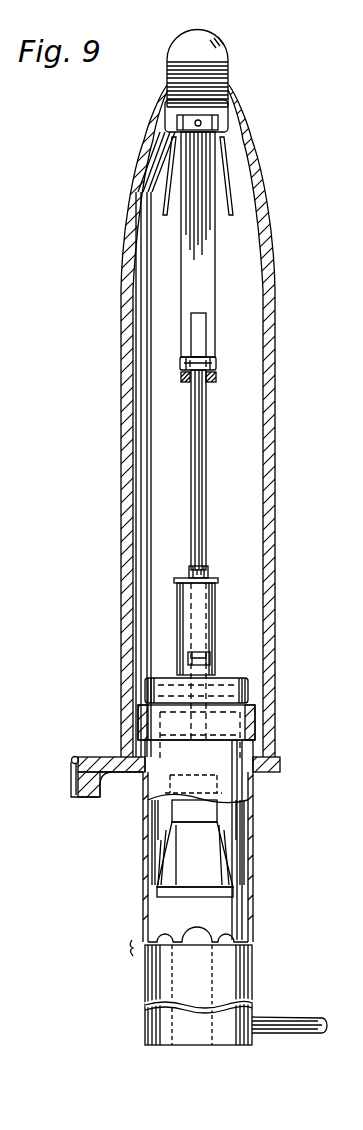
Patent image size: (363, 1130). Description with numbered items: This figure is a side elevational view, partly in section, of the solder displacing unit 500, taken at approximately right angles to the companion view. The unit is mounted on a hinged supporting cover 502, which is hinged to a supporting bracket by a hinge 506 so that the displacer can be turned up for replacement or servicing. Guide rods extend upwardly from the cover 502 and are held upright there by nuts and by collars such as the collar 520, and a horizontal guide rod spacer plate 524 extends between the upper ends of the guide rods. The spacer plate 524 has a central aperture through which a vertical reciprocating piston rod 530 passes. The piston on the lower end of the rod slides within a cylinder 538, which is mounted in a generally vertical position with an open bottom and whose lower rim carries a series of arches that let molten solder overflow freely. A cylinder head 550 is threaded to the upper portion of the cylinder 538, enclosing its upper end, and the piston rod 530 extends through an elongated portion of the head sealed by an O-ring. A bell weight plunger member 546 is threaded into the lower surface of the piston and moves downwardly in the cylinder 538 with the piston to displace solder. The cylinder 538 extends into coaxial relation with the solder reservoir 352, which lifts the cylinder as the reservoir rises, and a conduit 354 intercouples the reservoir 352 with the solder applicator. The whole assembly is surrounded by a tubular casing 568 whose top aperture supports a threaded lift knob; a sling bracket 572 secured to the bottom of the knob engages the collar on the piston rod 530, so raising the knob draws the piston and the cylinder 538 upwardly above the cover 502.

The solder displacing unit 500 is at (278, 437).
The collar 520 is at (221, 46).
The sling bracket 572 is at (205, 207).
The tubular casing 568 is at (268, 284).
The guide rod spacer plate 524 is at (216, 379).
The piston rod 530 is at (204, 493).
The cylinder head 550 is at (213, 692).
The cylinder 538 is at (237, 801).
The bell weight plunger member 546 is at (175, 855).
The hinged supporting cover 502 is at (113, 783).
The hinge 506 is at (71, 800).
The solder reservoir 352 is at (246, 984).
The conduit 354 is at (301, 1022).